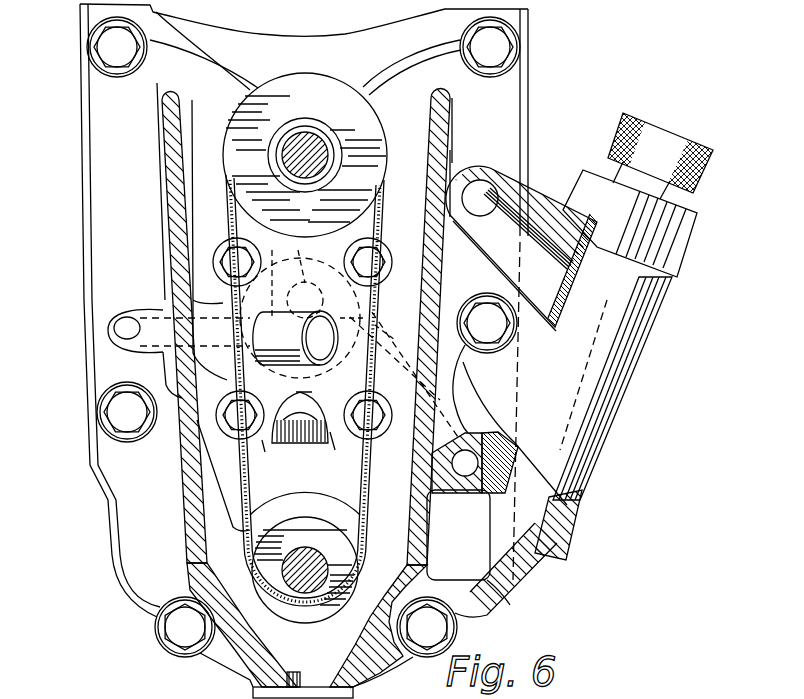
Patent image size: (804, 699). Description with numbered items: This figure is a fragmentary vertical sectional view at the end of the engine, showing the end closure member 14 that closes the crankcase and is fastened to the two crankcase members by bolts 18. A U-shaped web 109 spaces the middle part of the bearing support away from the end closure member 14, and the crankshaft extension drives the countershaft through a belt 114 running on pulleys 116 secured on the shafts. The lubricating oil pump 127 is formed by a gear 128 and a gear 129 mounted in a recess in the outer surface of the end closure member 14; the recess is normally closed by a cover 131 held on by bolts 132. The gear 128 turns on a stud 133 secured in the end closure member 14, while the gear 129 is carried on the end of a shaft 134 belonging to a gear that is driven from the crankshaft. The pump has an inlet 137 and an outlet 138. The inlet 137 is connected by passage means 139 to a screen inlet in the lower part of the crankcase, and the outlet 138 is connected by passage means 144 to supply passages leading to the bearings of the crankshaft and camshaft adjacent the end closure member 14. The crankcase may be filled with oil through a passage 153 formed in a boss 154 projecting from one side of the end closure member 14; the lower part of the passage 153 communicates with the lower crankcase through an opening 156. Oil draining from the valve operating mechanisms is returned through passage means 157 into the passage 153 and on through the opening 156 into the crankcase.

The end closure member 14 is at (134, 540).
The bolts 18 is at (102, 45).
The U-shaped web 109 is at (168, 238).
The belt 114 is at (255, 490).
The pulleys 116 is at (365, 122).
The lubricating oil pump 127 is at (330, 250).
The gear 128 is at (258, 340).
The gear 129 is at (345, 451).
The cover 131 is at (273, 457).
The bolts 132 is at (218, 255).
The stud 133 is at (290, 276).
The shaft 134 is at (405, 376).
The inlet 137 is at (348, 320).
The outlet 138 is at (297, 408).
The passage means 139 is at (465, 477).
The passage means 144 is at (150, 320).
The passage 153 is at (575, 528).
The boss 154 is at (612, 362).
The opening 156 is at (512, 604).
The passage means 157 is at (483, 181).